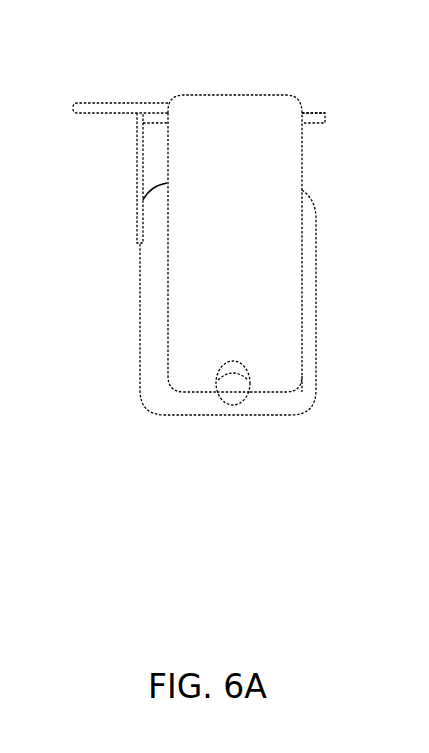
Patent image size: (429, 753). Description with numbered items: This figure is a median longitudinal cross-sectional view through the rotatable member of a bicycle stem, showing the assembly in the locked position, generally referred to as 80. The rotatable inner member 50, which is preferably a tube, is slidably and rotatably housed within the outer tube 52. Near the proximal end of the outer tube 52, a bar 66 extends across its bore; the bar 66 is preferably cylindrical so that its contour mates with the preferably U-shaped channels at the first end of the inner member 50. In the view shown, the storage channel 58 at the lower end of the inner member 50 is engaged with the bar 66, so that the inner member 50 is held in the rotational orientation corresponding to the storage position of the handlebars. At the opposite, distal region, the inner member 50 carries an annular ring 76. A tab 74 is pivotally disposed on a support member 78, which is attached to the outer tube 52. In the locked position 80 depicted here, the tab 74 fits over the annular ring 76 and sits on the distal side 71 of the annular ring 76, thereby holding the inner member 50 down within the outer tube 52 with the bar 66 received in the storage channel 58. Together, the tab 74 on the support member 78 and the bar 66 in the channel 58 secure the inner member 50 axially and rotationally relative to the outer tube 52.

The rotatable inner member 50 is at (300, 180).
The outer tube 52 is at (315, 262).
The storage channel 58 is at (247, 368).
The bar 66 is at (227, 402).
The distal side 71 is at (309, 112).
The tab 74 is at (118, 107).
The annular ring 76 is at (311, 122).
The support member 78 is at (138, 163).
The locked position 80 is at (248, 468).